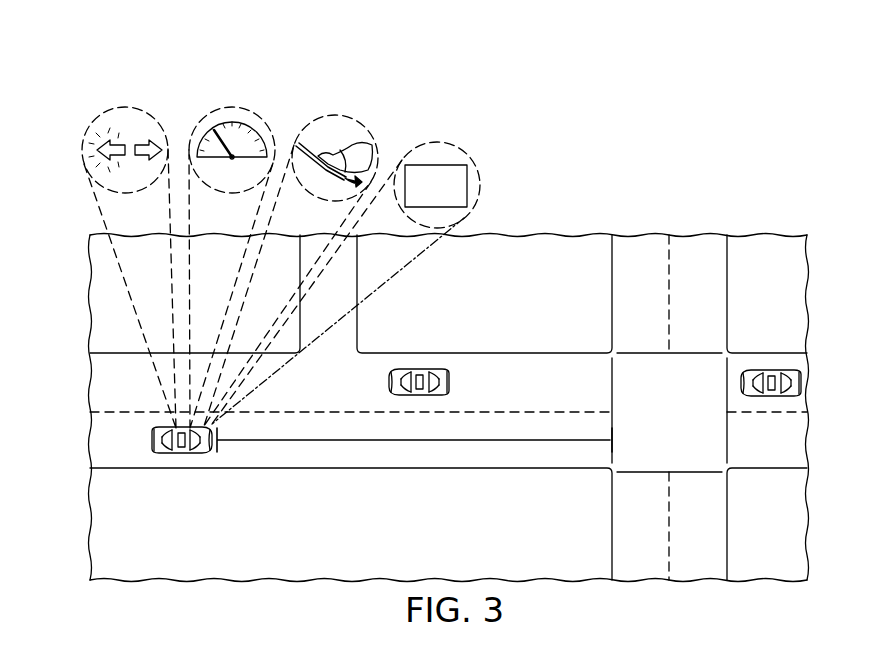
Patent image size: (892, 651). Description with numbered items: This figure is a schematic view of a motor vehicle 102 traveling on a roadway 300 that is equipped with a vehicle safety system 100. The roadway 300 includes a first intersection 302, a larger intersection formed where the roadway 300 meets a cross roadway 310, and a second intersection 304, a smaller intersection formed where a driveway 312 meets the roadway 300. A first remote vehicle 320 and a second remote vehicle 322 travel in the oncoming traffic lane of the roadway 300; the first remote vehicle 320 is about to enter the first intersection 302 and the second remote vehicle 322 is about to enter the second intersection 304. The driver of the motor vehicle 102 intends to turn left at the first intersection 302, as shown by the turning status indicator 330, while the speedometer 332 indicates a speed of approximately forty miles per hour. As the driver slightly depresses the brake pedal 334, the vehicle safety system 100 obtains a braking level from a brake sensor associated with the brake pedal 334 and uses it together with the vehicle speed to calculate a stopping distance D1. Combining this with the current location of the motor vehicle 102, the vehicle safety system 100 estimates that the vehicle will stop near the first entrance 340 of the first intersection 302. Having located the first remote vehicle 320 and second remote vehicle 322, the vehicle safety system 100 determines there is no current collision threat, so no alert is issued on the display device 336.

The vehicle safety system 100 is at (392, 121).
The motor vehicle 102 is at (176, 455).
The roadway 300 is at (537, 355).
The first intersection 302 is at (636, 445).
The second intersection 304 is at (333, 367).
The roadway 310 is at (713, 282).
The driveway 312 is at (352, 262).
The first remote vehicle 320 is at (782, 372).
The second remote vehicle 322 is at (426, 378).
The turning status indicator 330 is at (118, 138).
The speedometer 332 is at (220, 128).
The brake pedal 334 is at (304, 148).
The display device 336 is at (467, 180).
The first entrance 340 is at (612, 376).
The stopping distance D1 is at (437, 444).